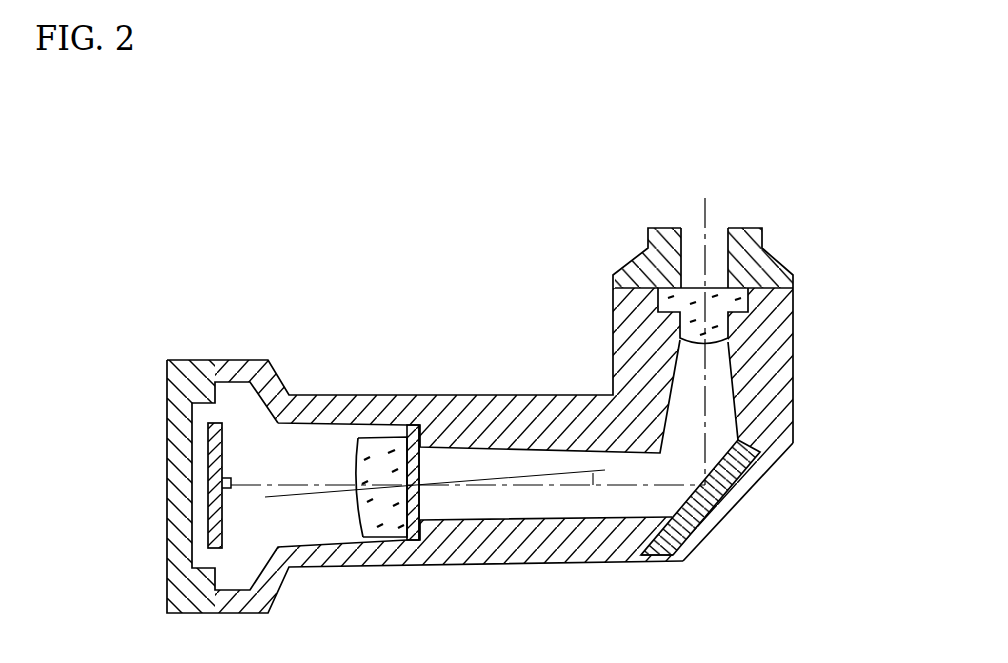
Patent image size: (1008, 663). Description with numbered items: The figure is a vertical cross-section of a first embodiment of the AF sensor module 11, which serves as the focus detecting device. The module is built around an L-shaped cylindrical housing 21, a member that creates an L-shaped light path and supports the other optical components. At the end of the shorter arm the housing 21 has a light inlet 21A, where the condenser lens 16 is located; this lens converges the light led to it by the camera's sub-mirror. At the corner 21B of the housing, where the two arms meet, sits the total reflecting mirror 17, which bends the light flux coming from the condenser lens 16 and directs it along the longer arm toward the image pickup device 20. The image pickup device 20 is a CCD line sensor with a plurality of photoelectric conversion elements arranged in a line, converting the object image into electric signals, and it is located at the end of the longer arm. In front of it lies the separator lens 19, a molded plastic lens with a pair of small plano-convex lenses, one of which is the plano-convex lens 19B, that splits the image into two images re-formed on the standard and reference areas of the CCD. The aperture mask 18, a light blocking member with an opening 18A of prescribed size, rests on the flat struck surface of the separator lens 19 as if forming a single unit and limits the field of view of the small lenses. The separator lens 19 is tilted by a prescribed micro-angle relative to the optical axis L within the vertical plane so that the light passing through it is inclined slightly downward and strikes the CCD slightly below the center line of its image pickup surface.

The AF sensor module 11 is at (468, 313).
The condenser lens 16 is at (733, 305).
The total reflecting mirror 17 is at (737, 493).
The aperture mask 18 is at (413, 427).
The opening 18A is at (422, 492).
The separator lens 19 is at (382, 526).
The plano-convex lens 19B is at (355, 510).
The image pickup device 20 is at (208, 458).
The L-shaped cylindrical housing 21 is at (548, 395).
The light inlet 21A is at (713, 240).
The corner 21B is at (702, 542).
The optical axis L is at (633, 485).